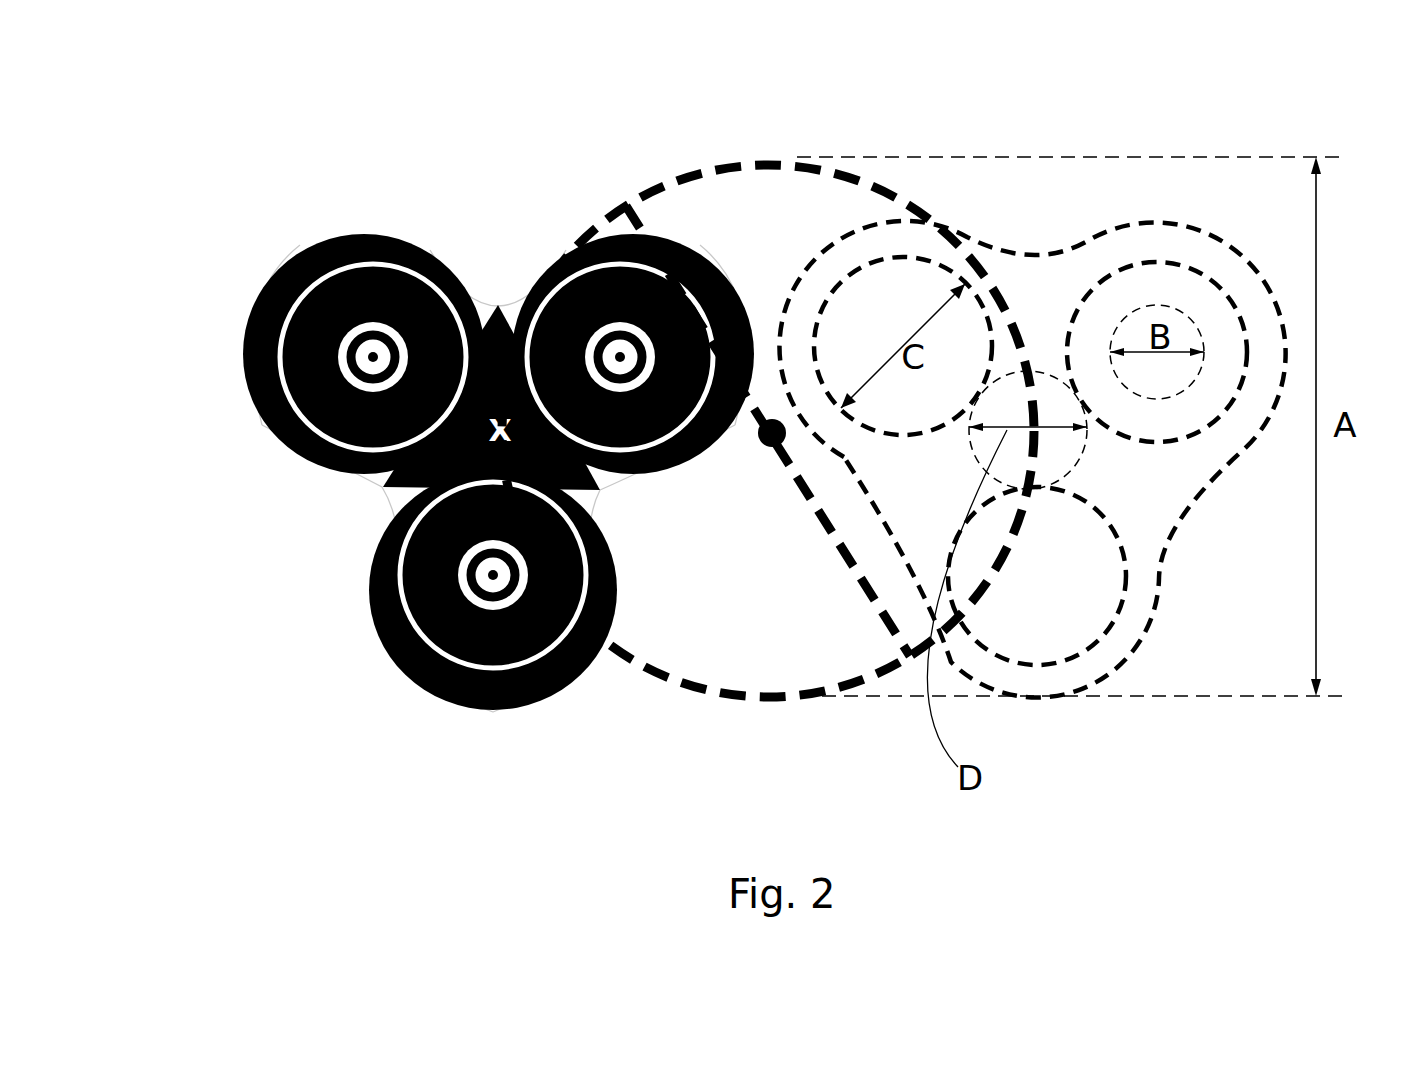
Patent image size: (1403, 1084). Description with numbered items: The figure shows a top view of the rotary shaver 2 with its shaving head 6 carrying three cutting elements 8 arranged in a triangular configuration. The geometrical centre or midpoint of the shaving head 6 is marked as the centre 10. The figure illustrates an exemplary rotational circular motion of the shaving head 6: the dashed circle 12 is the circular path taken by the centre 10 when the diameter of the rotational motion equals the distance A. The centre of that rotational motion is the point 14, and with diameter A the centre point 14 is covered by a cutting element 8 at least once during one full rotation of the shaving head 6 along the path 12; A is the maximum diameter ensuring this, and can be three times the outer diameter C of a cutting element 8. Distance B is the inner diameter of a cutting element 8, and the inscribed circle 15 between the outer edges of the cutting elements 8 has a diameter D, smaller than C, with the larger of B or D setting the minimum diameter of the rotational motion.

The rotary shaver 2 is at (197, 206).
The shaving head 6 is at (492, 277).
The cutting elements 8 is at (343, 307).
The centre of the shaving head 10 is at (382, 487).
The dashed circle 12 is at (880, 678).
The centre point of the rotational motion 14 is at (770, 440).
The inscribed circle 15 is at (1043, 372).